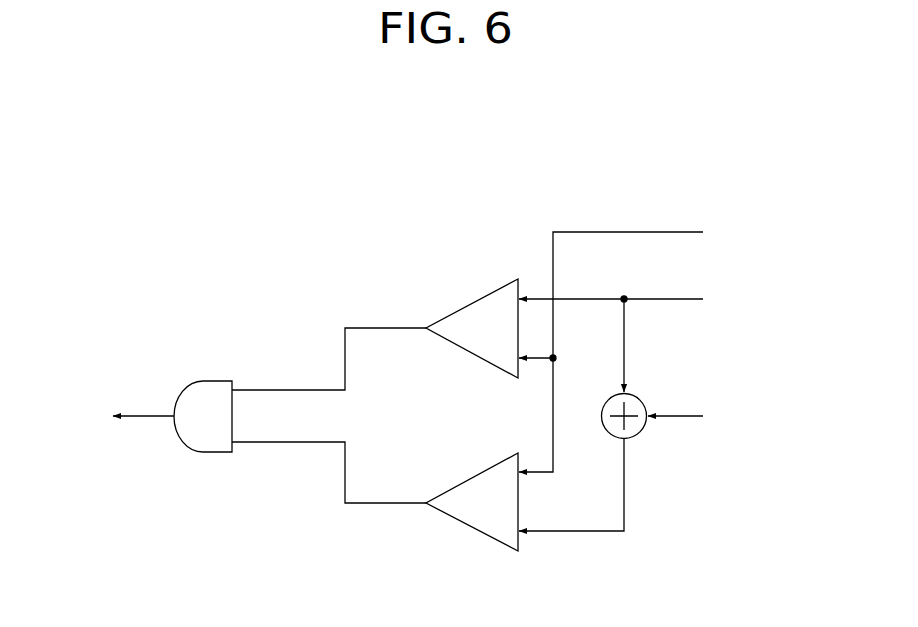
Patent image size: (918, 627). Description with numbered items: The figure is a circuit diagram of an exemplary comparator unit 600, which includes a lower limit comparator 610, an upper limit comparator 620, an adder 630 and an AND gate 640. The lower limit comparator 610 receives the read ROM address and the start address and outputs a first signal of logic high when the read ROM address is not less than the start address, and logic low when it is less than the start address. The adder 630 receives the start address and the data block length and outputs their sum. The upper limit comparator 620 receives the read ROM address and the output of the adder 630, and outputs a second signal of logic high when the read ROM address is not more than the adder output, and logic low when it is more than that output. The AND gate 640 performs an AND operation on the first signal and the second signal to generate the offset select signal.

The comparator unit 600 is at (500, 199).
The lower limit comparator 610 is at (466, 303).
The upper limit comparator 620 is at (466, 478).
The adder 630 is at (643, 430).
The AND gate 640 is at (209, 379).